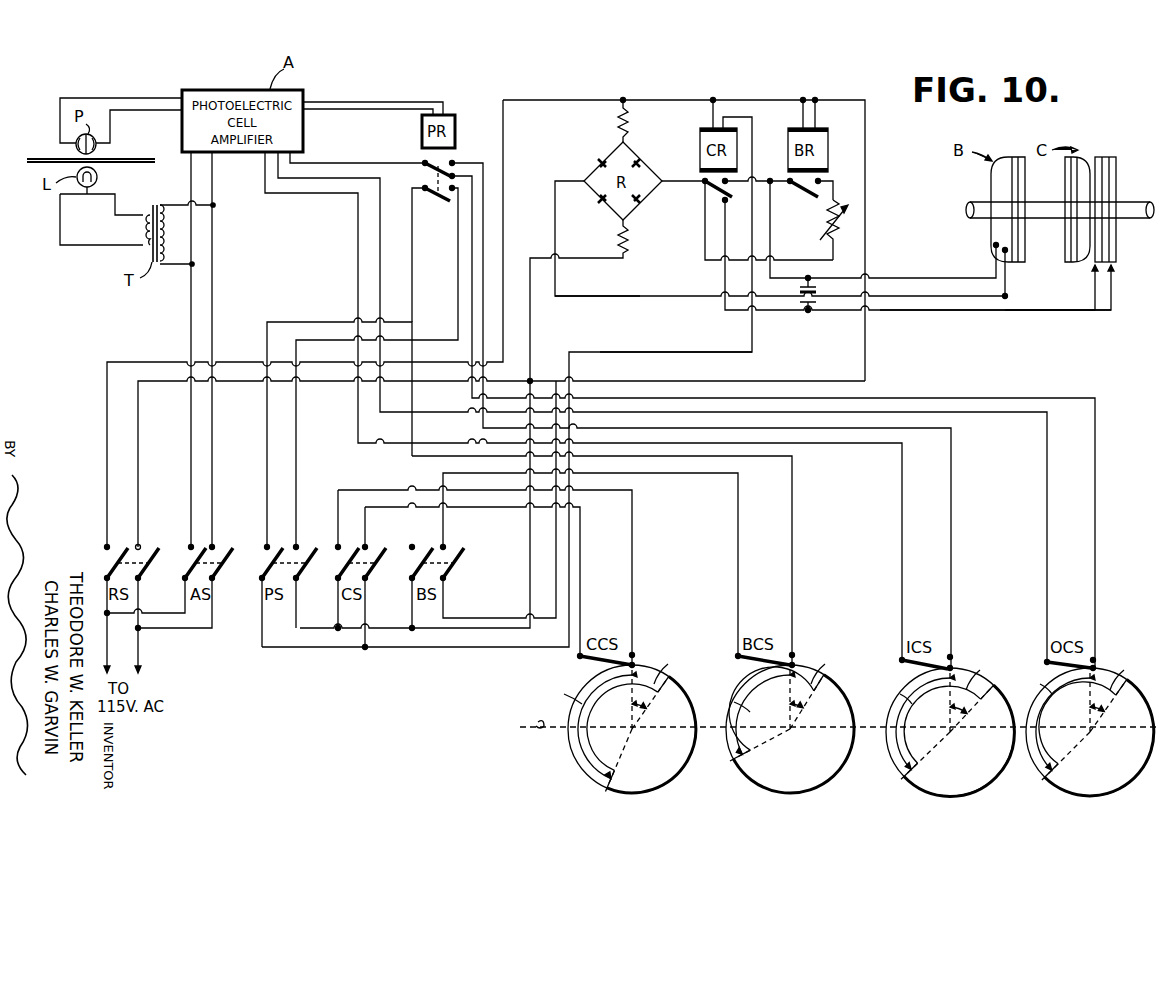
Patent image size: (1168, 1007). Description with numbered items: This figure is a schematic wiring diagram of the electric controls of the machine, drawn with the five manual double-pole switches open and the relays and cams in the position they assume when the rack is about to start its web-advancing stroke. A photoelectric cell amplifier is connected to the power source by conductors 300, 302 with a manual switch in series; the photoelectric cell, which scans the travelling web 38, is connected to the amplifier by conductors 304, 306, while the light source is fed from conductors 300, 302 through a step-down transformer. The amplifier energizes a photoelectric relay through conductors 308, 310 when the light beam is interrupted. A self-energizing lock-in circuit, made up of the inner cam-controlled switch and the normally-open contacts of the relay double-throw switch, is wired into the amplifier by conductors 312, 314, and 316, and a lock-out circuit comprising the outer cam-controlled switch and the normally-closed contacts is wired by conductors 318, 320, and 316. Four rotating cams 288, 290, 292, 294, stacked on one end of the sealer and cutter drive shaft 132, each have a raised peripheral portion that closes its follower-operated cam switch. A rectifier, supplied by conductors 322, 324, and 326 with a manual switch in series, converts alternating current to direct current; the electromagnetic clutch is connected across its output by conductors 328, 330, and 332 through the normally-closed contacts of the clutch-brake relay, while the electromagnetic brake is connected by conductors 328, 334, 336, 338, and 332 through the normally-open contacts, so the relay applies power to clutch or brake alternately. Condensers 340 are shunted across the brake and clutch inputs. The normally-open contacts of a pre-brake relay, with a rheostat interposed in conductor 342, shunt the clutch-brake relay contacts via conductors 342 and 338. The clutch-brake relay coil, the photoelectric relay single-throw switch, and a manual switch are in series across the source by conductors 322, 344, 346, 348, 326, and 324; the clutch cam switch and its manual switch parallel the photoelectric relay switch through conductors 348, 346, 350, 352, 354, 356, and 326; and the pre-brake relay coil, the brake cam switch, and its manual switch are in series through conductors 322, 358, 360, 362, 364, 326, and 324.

The web 38 is at (38, 158).
The sealer and cutter drive shaft 132 is at (548, 738).
The rotating cam 288 is at (680, 770).
The rotating cam 290 is at (830, 770).
The rotating cam 292 is at (982, 782).
The rotating cam 294 is at (1088, 794).
The conductor 300 is at (188, 330).
The conductor 302 is at (224, 314).
The conductor 304 is at (161, 96).
The conductor 306 is at (160, 110).
The conductor 308 is at (377, 100).
The conductor 310 is at (349, 111).
The conductor 312 is at (358, 277).
The conductor 314 is at (474, 162).
The conductor 316 is at (340, 167).
The conductor 318 is at (380, 230).
The conductor 320 is at (470, 220).
The conductor 322 is at (106, 396).
The conductor 324 is at (138, 420).
The conductor 326 is at (596, 267).
The conductor 328 is at (650, 296).
The conductor 330 is at (1026, 314).
The conductor 332 is at (683, 183).
The conductor 334 is at (1006, 282).
The conductor 336 is at (896, 280).
The conductor 338 is at (762, 178).
The condenser 340 is at (806, 314).
The conductor 342 is at (788, 260).
The conductor 344 is at (706, 117).
The conductor 346 is at (674, 352).
The conductor 348 is at (267, 446).
The conductor 350 is at (364, 598).
The conductor 352 is at (588, 600).
The conductor 354 is at (632, 586).
The conductor 356 is at (338, 612).
The conductor 358 is at (868, 208).
The conductor 360 is at (456, 522).
The conductor 362 is at (412, 478).
The conductor 364 is at (364, 620).